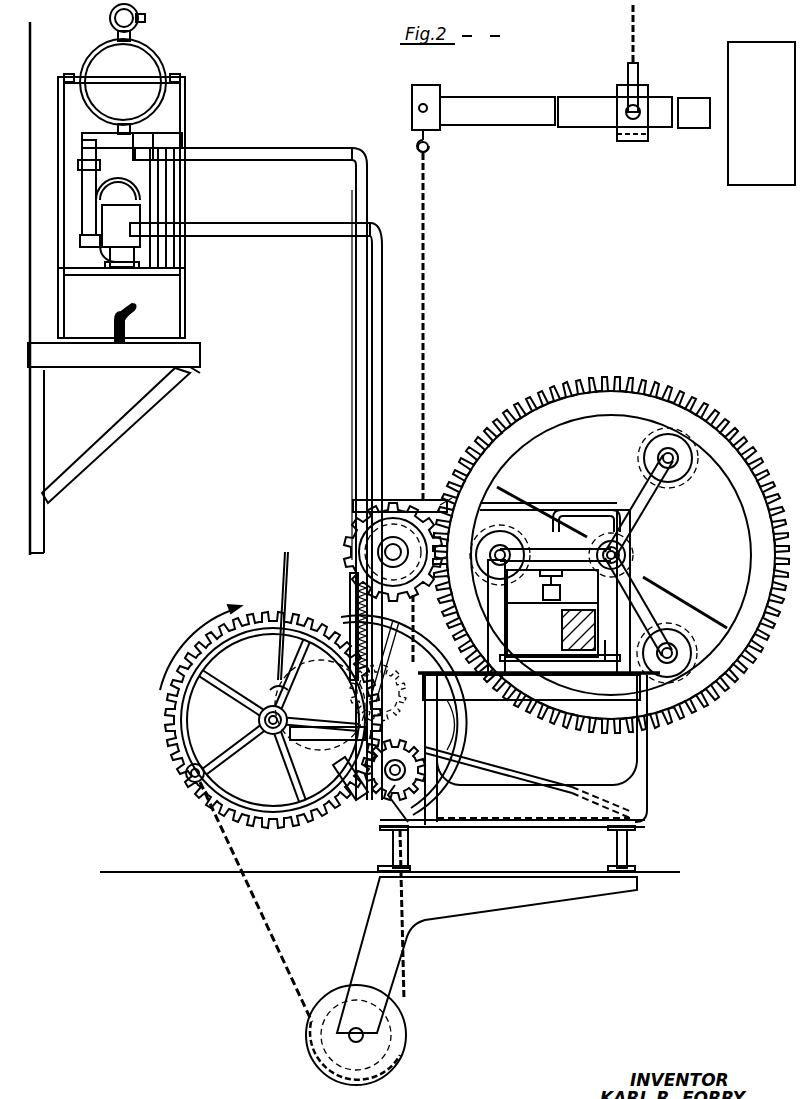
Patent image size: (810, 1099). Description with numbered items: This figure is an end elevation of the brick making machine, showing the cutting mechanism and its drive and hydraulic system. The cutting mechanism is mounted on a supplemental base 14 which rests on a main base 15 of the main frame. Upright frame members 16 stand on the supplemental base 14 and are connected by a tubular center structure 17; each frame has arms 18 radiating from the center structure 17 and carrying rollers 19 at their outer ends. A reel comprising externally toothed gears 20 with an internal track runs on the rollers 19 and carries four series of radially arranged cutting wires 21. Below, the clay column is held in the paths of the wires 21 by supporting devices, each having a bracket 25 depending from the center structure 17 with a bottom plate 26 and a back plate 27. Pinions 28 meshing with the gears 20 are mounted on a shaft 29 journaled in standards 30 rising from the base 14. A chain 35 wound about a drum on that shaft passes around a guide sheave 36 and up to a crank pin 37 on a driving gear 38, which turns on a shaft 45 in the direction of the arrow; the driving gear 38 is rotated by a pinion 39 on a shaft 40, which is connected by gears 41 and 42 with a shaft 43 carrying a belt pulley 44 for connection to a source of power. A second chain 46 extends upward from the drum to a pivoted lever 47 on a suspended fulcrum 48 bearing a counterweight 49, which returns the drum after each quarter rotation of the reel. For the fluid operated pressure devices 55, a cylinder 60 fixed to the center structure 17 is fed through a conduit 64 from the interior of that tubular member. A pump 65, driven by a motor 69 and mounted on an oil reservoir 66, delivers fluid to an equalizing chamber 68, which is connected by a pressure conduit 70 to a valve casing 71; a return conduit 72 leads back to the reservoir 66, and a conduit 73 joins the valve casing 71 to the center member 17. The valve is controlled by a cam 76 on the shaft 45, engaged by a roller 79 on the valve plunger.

The supplemental base 14 is at (525, 676).
The main base 15 is at (617, 853).
The upright frame members 16 is at (490, 600).
The center structure 17 is at (630, 556).
The arms 18 is at (645, 521).
The rollers 19 is at (690, 472).
The gears 20 is at (714, 698).
The wires 21 is at (515, 492).
The bracket 25 is at (582, 660).
The bottom plate 26 is at (560, 615).
The back plate 27 is at (606, 660).
The pinions 28 is at (393, 535).
The shaft 29 is at (385, 551).
The standards 30 is at (405, 605).
The chain 35 is at (416, 660).
The guide sheave 36 is at (400, 1037).
The crank pin 37 is at (189, 779).
The driving gear 38 is at (268, 824).
The pinion 39 is at (426, 782).
The shaft 40 is at (423, 775).
The gear 41 is at (405, 738).
The gear 42 is at (386, 690).
The shaft 43 is at (352, 693).
The belt pulley 44 is at (333, 615).
The shaft 45 is at (262, 720).
The second chain 46 is at (428, 286).
The pivoted lever 47 is at (524, 128).
The suspended fulcrum 48 is at (645, 106).
The counterweight 49 is at (761, 113).
The pressure device 55 is at (568, 629).
The cylinder 60 is at (543, 591).
The conduit 64 is at (580, 508).
The pump 65 is at (121, 236).
The oil reservoir 66 is at (121, 208).
The equalizing chamber 68 is at (123, 69).
The motor 69 is at (116, 186).
The pressure conduit 70 is at (306, 155).
The valve casing 71 is at (346, 808).
The return conduit 72 is at (291, 233).
The conduit 73 is at (447, 502).
The cam 76 is at (266, 688).
The roller 79 is at (327, 739).